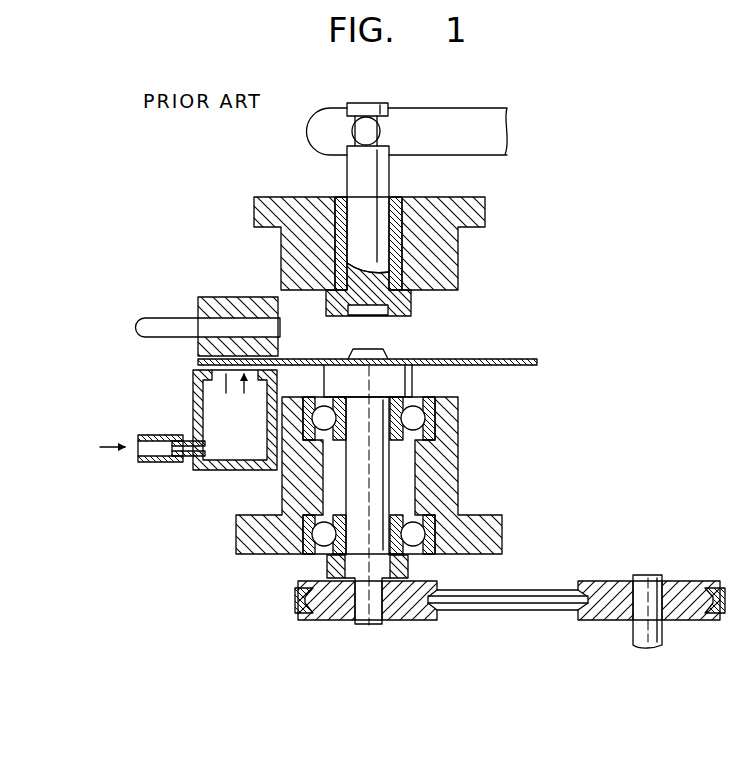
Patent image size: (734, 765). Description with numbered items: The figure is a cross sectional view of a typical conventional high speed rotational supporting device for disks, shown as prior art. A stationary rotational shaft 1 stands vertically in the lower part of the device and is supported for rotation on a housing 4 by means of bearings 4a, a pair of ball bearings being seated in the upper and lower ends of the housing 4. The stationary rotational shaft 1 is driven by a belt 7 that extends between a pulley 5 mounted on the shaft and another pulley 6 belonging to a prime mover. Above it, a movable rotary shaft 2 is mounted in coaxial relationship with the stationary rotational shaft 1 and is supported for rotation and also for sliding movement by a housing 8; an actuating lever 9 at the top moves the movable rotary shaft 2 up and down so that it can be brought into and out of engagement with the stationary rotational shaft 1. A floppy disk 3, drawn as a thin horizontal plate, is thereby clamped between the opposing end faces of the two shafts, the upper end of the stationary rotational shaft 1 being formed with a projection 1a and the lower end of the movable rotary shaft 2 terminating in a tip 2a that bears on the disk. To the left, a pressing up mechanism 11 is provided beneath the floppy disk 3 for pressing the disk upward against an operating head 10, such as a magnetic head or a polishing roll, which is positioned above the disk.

The stationary rotational shaft 1 is at (378, 484).
The shaft top projection 1a is at (378, 357).
The movable rotary shaft 2 is at (367, 188).
The pressing rod tip 2a is at (413, 313).
The floppy disk 3 is at (535, 360).
The housing 4 is at (447, 504).
The bearings 4a is at (425, 418).
The pulley 5 is at (398, 613).
The pulley of prime mover 6 is at (690, 608).
The belt 7 is at (500, 603).
The housing 8 is at (448, 262).
The actuating lever 9 is at (472, 118).
The operating head 10 is at (215, 303).
The pressing up mechanism 11 is at (230, 438).